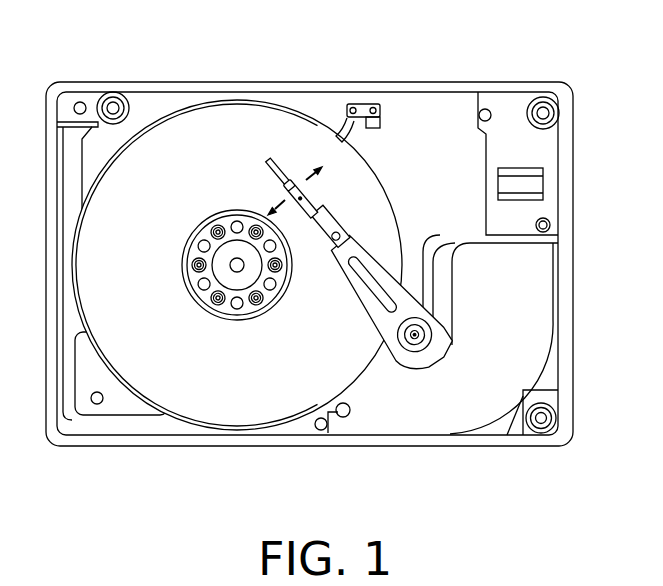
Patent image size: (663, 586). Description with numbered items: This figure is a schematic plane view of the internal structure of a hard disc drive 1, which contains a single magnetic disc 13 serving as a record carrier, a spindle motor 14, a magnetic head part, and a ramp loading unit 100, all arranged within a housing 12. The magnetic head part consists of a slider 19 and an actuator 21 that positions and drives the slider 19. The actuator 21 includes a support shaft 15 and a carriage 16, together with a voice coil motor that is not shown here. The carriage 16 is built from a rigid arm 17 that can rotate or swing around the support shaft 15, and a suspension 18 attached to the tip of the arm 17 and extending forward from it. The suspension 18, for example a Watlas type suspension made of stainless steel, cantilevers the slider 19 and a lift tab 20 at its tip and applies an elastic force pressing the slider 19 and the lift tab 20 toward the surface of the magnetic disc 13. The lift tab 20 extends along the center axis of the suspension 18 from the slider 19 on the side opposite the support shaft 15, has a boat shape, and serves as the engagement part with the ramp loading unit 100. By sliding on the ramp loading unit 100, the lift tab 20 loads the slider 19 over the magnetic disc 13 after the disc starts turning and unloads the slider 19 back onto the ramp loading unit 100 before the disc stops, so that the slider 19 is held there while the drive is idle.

The hard disc drive 1 is at (309, 248).
The housing 12 is at (309, 285).
The magnetic disc 13 is at (247, 265).
The spindle motor 14 is at (200, 276).
The support shaft 15 is at (425, 357).
The carriage 16 is at (350, 273).
The arm 17 is at (356, 288).
The suspension 18 is at (330, 204).
The slider 19 is at (289, 186).
The lift tab 20 is at (272, 158).
The actuator 21 is at (501, 369).
The ramp loading unit 100 is at (387, 97).